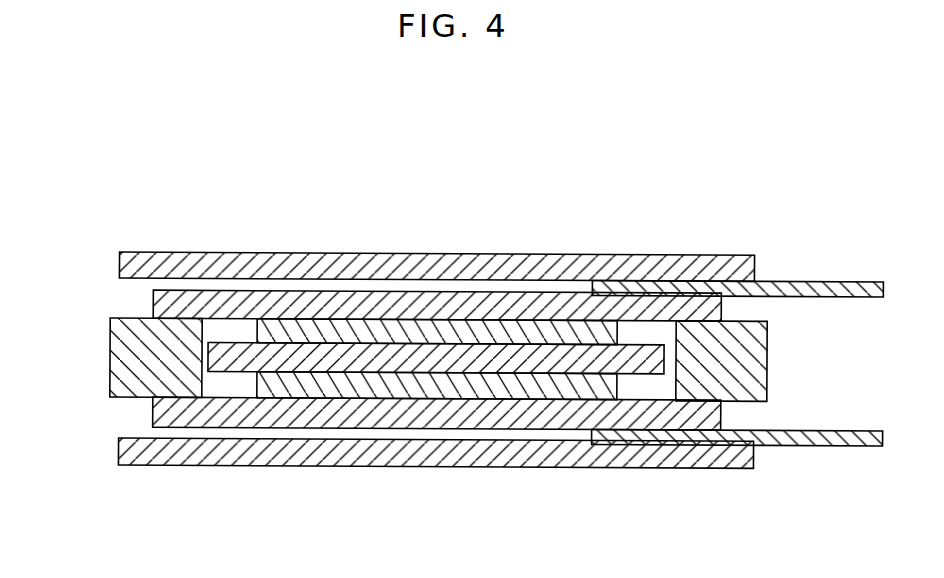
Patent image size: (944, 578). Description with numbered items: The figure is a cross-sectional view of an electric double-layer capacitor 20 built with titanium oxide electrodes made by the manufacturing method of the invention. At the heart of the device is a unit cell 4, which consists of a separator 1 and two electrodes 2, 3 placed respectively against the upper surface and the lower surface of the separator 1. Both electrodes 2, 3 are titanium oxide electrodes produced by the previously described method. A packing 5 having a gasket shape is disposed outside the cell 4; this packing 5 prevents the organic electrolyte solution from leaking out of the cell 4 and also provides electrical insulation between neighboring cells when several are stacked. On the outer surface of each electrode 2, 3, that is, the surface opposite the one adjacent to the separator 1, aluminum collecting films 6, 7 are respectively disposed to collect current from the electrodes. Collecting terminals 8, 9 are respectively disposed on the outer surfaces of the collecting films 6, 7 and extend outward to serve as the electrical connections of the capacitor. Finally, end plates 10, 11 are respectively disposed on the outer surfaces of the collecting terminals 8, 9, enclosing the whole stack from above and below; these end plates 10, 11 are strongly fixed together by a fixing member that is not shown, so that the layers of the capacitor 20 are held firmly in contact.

The separator 1 is at (392, 360).
The electrode 2 is at (349, 333).
The electrode 3 is at (303, 514).
The unit cell 4 is at (436, 439).
The packing 5 is at (110, 350).
The aluminum collecting film 6 is at (530, 315).
The aluminum collecting film 7 is at (568, 418).
The collecting terminal 8 is at (813, 285).
The collecting terminal 9 is at (812, 443).
The end plate 10 is at (673, 260).
The end plate 11 is at (682, 462).
The battery cell 20 is at (268, 216).